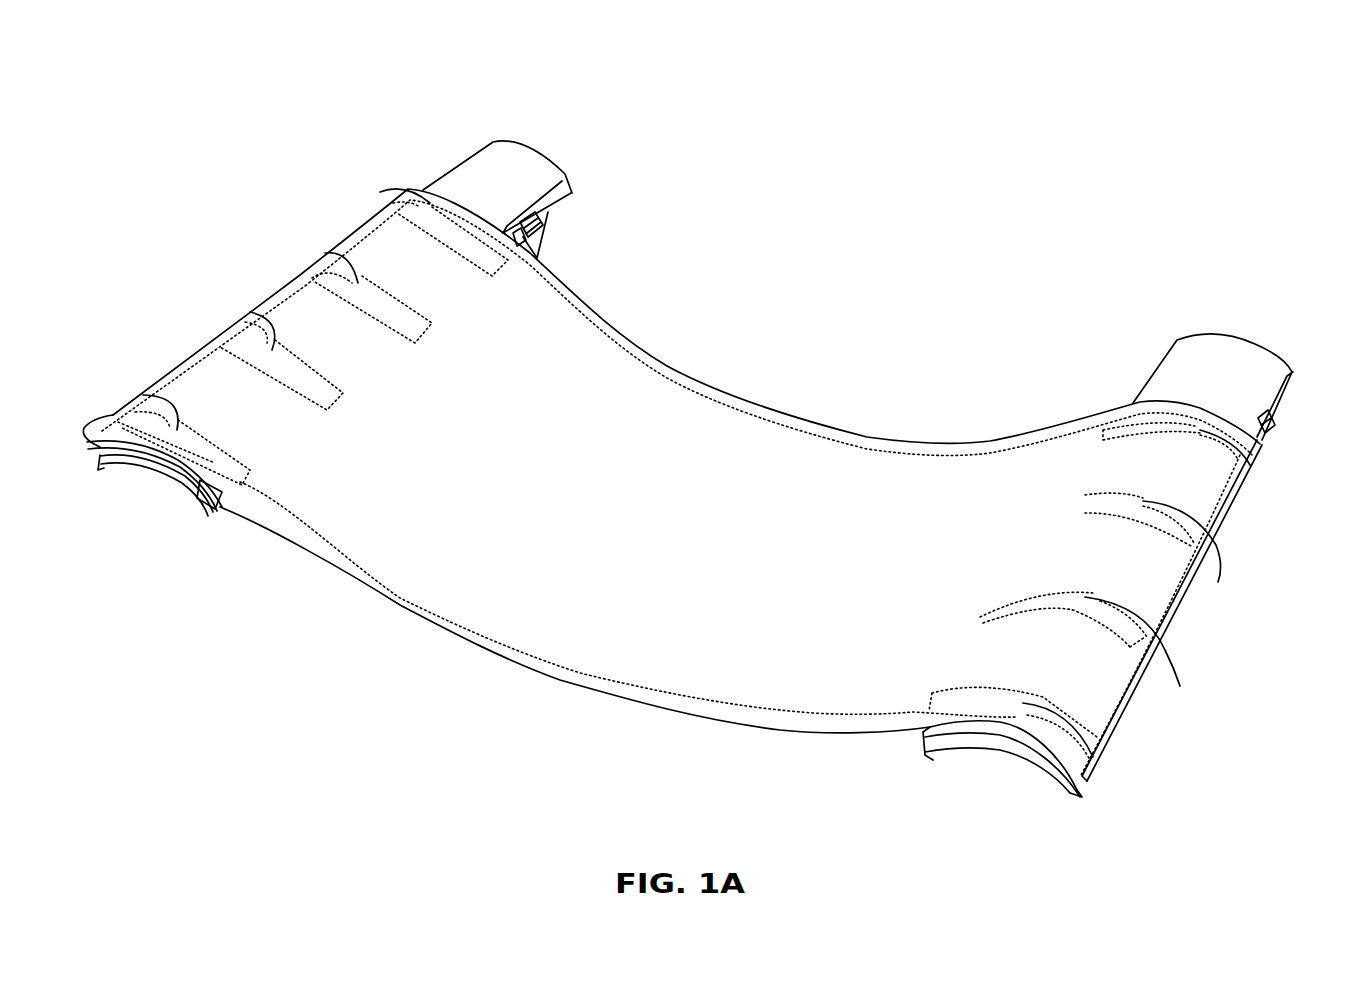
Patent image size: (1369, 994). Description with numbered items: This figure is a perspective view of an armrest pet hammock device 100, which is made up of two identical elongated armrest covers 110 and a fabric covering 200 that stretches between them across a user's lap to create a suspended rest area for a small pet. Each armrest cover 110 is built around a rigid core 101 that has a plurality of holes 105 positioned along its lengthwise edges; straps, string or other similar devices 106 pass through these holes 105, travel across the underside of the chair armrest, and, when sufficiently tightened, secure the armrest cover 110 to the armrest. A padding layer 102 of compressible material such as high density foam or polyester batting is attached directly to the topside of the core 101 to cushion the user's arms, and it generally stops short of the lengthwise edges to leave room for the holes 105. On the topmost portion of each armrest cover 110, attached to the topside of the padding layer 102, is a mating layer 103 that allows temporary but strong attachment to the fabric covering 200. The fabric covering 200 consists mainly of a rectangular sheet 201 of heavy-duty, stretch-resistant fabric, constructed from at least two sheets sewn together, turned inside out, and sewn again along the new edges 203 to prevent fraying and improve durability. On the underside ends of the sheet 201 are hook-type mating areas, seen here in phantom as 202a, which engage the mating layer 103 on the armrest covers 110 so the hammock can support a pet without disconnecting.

The armrest pet hammock device 100 is at (940, 111).
The armrest cover 110 is at (455, 131).
The core 101 is at (1287, 390).
The padding layer 102 is at (1190, 355).
The mating layer 103 is at (97, 447).
The holes 105 is at (545, 217).
The straps, string or other similar devices 106 is at (540, 243).
The fabric covering 200 is at (570, 724).
The sheet 201 is at (613, 523).
The mating areas (in phantom) 202a is at (397, 190).
The edges 203 is at (473, 630).